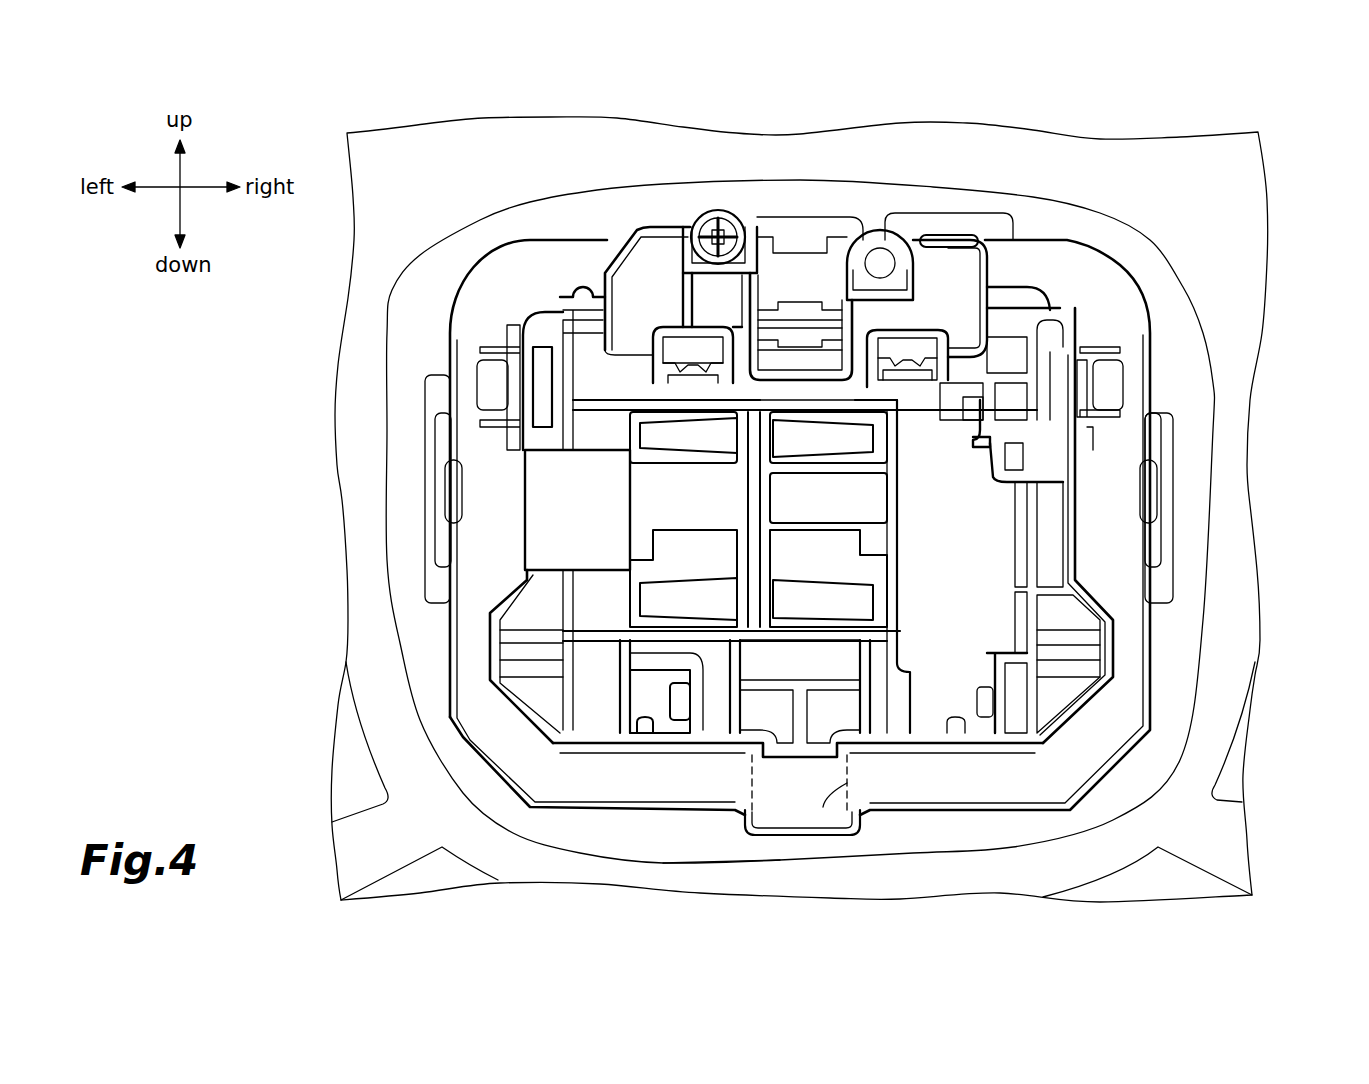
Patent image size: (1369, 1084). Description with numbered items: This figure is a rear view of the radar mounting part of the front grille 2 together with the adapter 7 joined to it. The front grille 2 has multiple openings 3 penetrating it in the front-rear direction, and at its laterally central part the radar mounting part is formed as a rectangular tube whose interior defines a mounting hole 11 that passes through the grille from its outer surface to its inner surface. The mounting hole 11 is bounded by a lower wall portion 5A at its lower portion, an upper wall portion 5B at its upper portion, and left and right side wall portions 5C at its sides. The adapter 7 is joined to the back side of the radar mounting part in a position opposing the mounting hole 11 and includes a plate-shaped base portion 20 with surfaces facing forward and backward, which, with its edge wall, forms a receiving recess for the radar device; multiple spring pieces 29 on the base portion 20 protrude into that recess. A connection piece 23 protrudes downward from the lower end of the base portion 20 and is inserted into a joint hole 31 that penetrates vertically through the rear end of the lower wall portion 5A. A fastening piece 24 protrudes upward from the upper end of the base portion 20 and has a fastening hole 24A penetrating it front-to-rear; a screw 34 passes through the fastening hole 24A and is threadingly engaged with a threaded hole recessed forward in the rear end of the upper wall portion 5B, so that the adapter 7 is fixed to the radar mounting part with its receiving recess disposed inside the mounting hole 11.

The front grille 2 is at (435, 147).
The openings 3 is at (362, 742).
The lower wall portion 5A is at (932, 793).
The upper wall portion 5B is at (537, 260).
The side wall portions 5C is at (473, 640).
The adapter 7 is at (1063, 300).
The mounting hole 11 is at (570, 287).
The base portion 20 is at (590, 717).
The connection piece 23 is at (792, 820).
The fastening piece 24 is at (663, 250).
The fastening hole 24A is at (733, 205).
The spring pieces 29 is at (650, 440).
The joint hole 31 is at (847, 815).
The screw 34 is at (717, 210).